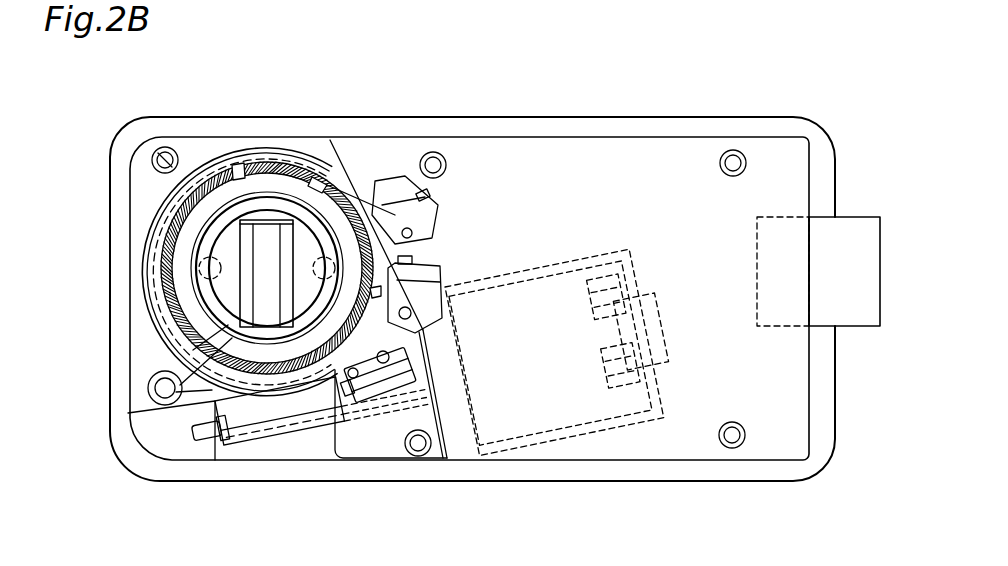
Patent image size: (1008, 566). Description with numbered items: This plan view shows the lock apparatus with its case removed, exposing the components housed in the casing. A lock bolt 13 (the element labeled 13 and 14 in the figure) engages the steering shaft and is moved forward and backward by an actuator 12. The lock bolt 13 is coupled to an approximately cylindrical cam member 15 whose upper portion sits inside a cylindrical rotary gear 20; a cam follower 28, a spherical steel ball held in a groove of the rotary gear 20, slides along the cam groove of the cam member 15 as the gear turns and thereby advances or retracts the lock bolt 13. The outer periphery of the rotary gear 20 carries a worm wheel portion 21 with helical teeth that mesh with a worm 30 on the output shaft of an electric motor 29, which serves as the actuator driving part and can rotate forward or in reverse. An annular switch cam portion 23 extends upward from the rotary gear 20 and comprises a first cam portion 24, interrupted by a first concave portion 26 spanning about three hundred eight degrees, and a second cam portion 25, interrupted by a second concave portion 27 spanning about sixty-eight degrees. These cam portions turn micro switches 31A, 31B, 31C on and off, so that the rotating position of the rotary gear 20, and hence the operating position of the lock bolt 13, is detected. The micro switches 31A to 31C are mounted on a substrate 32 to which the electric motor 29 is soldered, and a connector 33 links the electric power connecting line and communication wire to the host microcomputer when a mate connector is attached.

The actuator 12 is at (777, 123).
The lock bolt 13 is at (267, 233).
The image pickup element 14 is at (266, 275).
The cam member 15 is at (220, 248).
The rotary gear 20 is at (150, 208).
The worm wheel portion 21 is at (143, 288).
The switch cam portion 23 is at (143, 60).
The first cam portion 24 is at (183, 190).
The second cam portion 25 is at (163, 197).
The first concave portion 26 is at (197, 343).
The second concave portion 27 is at (328, 182).
The cam follower 28 is at (193, 272).
The electric motor 29 is at (463, 408).
The worm 30 is at (288, 420).
The micro switch 31A is at (430, 263).
The micro switch 31B is at (420, 370).
The micro switch 31C is at (427, 190).
The substrate 32 is at (617, 158).
The connector 33 is at (852, 230).